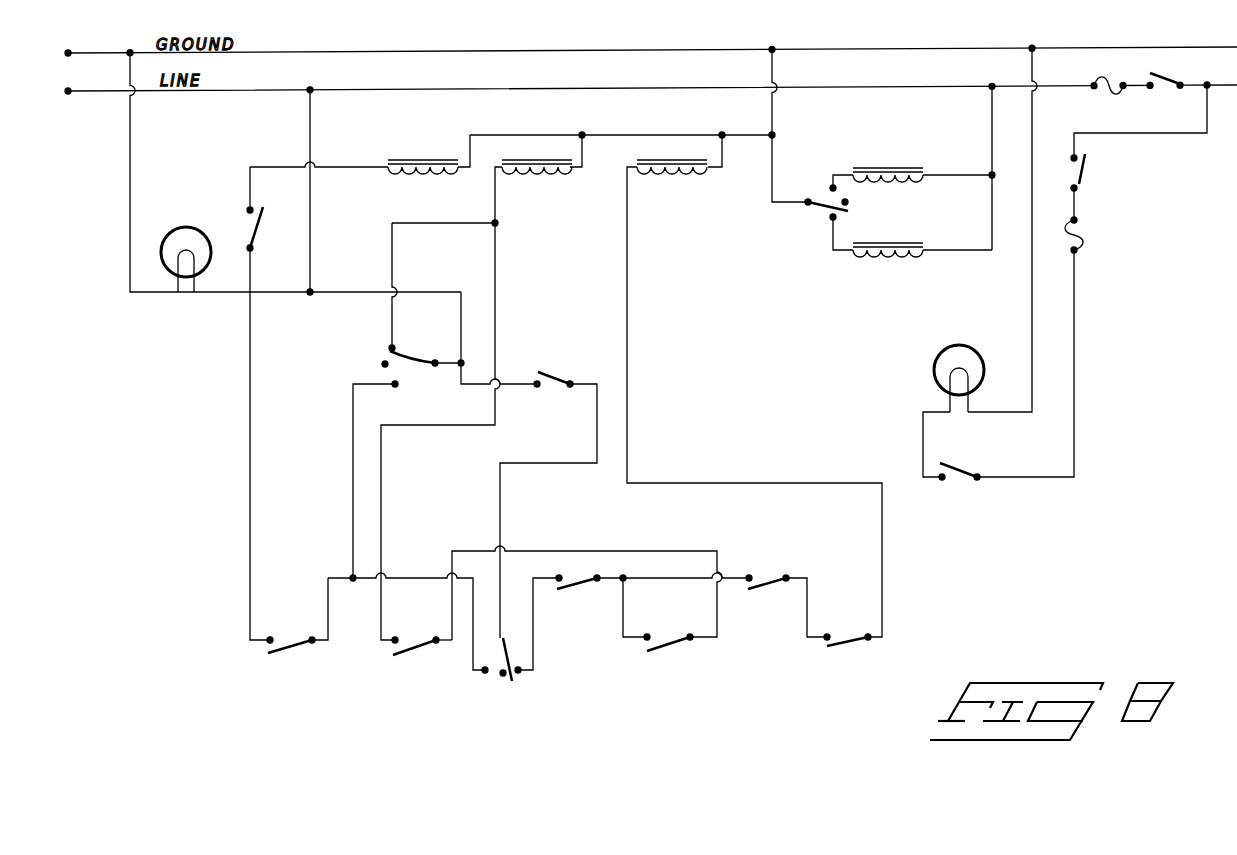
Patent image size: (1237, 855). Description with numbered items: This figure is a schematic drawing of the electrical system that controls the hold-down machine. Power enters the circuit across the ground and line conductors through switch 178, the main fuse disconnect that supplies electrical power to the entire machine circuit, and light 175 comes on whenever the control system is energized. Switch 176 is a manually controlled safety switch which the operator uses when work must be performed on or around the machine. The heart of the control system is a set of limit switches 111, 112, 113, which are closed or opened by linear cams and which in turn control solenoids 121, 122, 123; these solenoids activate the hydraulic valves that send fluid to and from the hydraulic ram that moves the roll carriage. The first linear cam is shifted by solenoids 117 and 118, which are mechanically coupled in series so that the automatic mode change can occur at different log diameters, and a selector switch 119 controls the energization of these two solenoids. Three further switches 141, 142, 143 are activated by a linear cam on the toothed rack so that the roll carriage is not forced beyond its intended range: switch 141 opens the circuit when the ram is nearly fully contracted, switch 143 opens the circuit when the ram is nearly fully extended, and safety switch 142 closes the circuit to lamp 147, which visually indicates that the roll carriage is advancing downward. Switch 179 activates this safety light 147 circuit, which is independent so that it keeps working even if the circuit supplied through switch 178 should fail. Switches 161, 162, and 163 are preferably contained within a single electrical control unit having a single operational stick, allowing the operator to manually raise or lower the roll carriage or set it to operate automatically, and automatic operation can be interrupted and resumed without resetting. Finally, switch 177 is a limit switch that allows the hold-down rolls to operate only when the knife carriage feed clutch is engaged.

The limit switch 111 is at (498, 662).
The limit switch 112 is at (676, 651).
The limit switch 113 is at (851, 651).
The solenoid 117 is at (880, 184).
The solenoid 118 is at (912, 252).
The selector switch 119 is at (805, 211).
The solenoid 121 is at (448, 176).
The solenoid 122 is at (560, 178).
The solenoid 123 is at (703, 176).
The switch 141 is at (284, 656).
The safety switch 142 is at (953, 490).
The switch 143 is at (398, 661).
The lamp 147 is at (946, 354).
The switch 161 is at (386, 357).
The switch 162 is at (560, 380).
The switch 163 is at (763, 575).
The light 175 is at (190, 228).
The safety switch 176 is at (252, 214).
The limit switch 177 is at (559, 594).
The main fuse disconnect switch 178 is at (1168, 77).
The switch 179 is at (1088, 180).